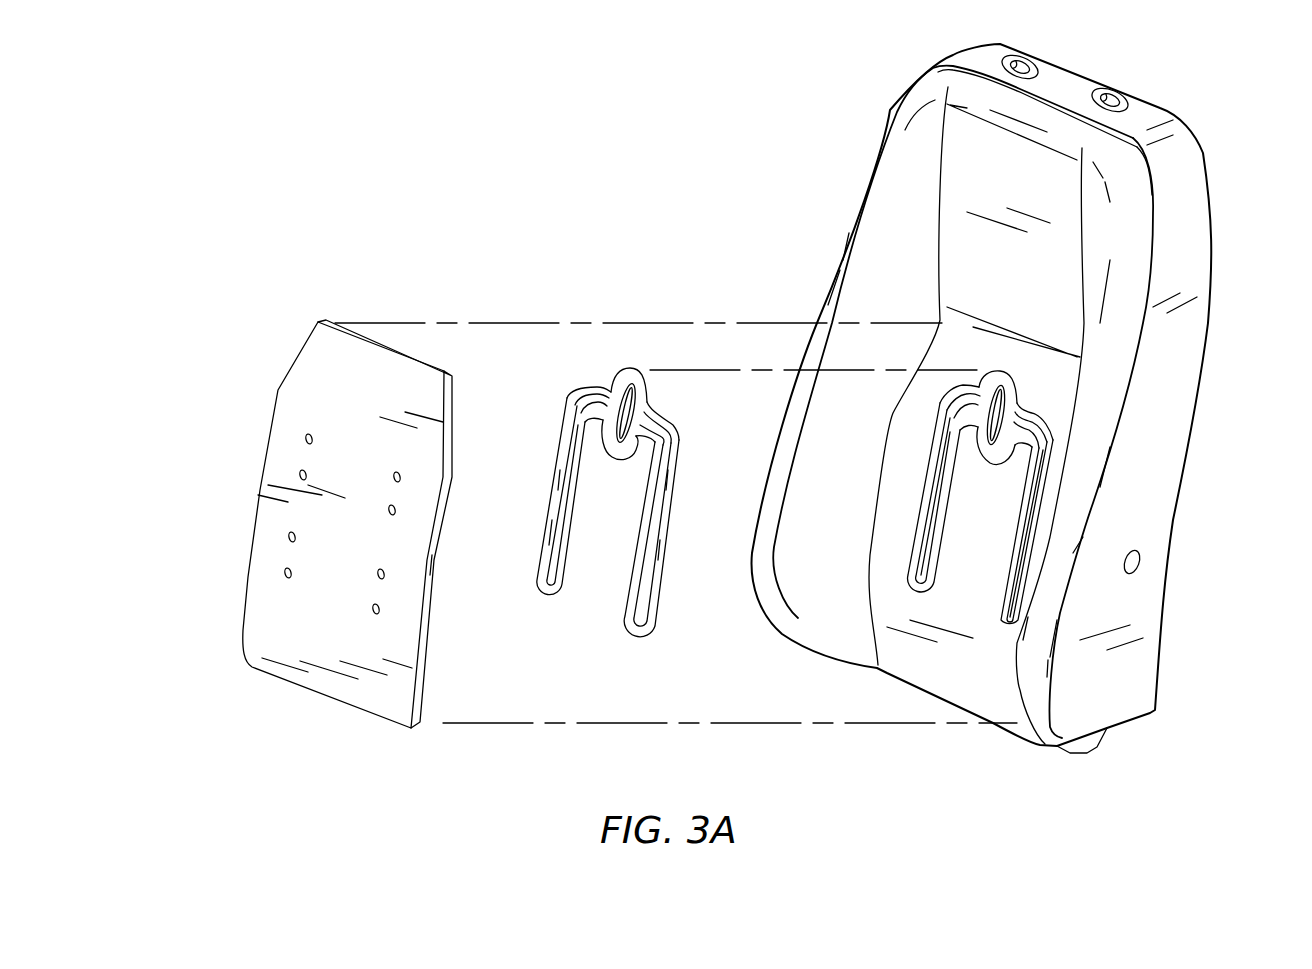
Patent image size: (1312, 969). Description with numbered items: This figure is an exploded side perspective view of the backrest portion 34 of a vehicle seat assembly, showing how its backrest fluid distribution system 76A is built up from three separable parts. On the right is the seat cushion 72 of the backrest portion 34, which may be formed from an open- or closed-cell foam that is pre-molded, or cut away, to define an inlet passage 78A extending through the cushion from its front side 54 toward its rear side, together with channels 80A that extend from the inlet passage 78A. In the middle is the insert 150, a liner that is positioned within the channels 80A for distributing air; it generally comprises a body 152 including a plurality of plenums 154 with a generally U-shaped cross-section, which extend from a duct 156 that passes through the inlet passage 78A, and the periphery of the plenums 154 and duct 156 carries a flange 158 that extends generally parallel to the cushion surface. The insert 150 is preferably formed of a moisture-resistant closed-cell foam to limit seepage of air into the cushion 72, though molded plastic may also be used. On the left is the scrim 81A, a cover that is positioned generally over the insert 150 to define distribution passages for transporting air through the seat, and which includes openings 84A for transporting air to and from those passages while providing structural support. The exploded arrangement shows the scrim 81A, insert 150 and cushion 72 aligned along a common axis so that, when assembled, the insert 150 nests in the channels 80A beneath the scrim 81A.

The backrest portion 34 is at (1030, 398).
The front side 54 is at (982, 168).
The seat cushion 72 is at (1105, 165).
The backrest fluid distribution system 76A is at (635, 233).
The inlet passage 78A is at (1082, 497).
The channels 80A is at (1035, 523).
The scrim 81A is at (311, 515).
The openings 84A is at (302, 477).
The insert 150 is at (610, 503).
The body 152 is at (668, 555).
The plenums 154 is at (548, 477).
The duct 156 is at (617, 370).
The flange 158 is at (573, 397).